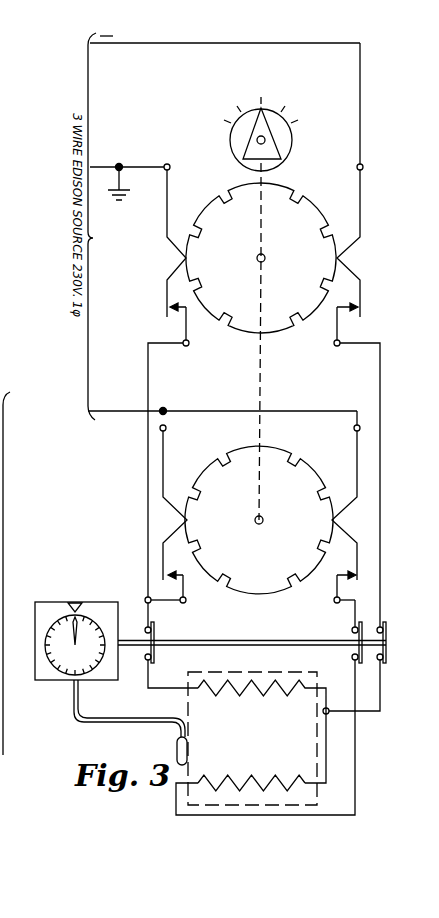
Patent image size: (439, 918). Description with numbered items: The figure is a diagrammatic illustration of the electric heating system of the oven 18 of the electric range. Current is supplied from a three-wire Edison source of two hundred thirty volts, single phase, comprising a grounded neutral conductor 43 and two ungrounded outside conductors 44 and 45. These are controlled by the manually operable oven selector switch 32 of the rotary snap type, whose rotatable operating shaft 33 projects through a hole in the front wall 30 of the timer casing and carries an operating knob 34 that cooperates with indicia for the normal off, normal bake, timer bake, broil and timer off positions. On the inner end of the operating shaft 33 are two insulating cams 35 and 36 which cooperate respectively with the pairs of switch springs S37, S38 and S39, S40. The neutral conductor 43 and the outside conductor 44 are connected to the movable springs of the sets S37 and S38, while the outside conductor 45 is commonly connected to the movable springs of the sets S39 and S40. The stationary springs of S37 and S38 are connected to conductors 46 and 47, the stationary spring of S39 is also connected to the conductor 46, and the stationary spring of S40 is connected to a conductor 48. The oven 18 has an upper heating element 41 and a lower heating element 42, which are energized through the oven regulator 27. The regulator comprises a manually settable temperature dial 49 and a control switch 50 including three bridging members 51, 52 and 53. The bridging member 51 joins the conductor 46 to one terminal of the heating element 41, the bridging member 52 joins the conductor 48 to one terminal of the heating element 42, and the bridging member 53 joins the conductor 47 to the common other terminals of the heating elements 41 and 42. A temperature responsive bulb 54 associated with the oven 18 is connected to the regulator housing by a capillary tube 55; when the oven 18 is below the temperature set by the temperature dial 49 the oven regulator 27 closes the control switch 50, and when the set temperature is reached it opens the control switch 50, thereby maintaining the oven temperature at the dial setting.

The outside conductor 44 is at (113, 45).
The neutral conductor 43 is at (149, 167).
The outside conductor 45 is at (117, 411).
The conductor 46 is at (148, 449).
The conductor 47 is at (380, 456).
The operating knob 34 is at (291, 149).
The operating shaft 33 is at (257, 355).
The insulating cam 35 is at (261, 258).
The insulating cam 36 is at (259, 520).
The oven selector switch 32 is at (261, 386).
The switch springs S37 is at (158, 258).
The switch springs S38 is at (364, 258).
The switch springs S39 is at (177, 506).
The switch springs S40 is at (341, 514).
The bridging member 51 is at (155, 636).
The conductor 48 is at (355, 627).
The bridging member 52 is at (353, 658).
The bridging member 53 is at (388, 630).
The control switch 50 is at (390, 643).
The oven 18 is at (248, 757).
The upper heating element 41 is at (214, 680).
The lower heating element 42 is at (246, 785).
The oven regulator 27 is at (35, 620).
The temperature dial 49 is at (65, 666).
The capillary tube 55 is at (129, 720).
The temperature responsive bulb 54 is at (174, 751).
The front wall 30 is at (20, 748).